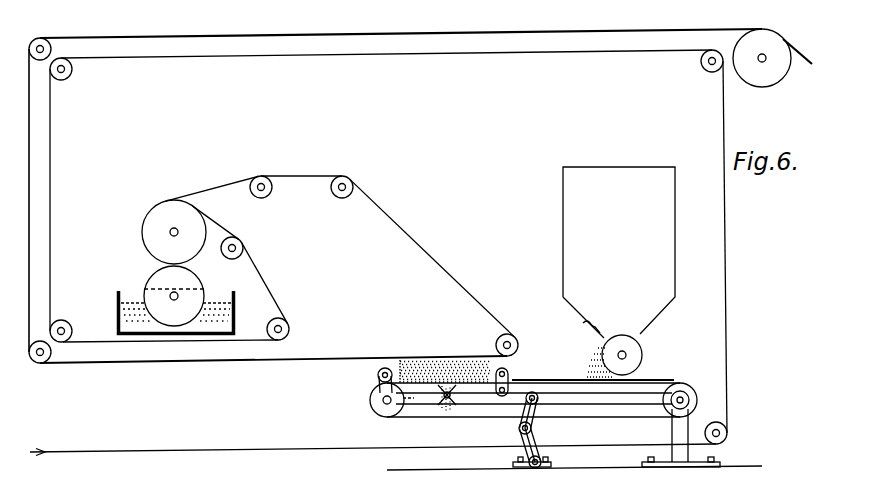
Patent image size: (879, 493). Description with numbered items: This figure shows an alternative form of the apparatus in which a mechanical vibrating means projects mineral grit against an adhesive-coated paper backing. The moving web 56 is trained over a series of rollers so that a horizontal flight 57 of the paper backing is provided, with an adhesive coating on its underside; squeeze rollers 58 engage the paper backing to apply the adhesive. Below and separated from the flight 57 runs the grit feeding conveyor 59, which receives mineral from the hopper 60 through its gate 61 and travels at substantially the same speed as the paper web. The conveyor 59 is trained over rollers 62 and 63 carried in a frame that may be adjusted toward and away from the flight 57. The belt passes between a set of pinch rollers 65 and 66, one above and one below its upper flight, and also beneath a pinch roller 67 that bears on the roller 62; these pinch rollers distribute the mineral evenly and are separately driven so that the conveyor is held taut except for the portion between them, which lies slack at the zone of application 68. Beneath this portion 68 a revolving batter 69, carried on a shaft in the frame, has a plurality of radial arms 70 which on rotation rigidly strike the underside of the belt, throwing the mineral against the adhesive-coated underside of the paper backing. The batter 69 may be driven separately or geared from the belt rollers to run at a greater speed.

The moving web 56 is at (51, 223).
The horizontal flight 57 is at (320, 359).
The squeeze rollers 58 is at (148, 242).
The grit feeding conveyor 59 is at (652, 379).
The hopper 60 is at (676, 249).
The gate 61 is at (601, 356).
The roller 62 is at (371, 402).
The roller 63 is at (691, 385).
The pinch roller 65 is at (509, 372).
The pinch roller 66 is at (509, 387).
The pinch roller 67 is at (377, 376).
The zone of application 68 is at (403, 366).
The revolving batter 69 is at (451, 406).
The radial arms 70 is at (440, 404).